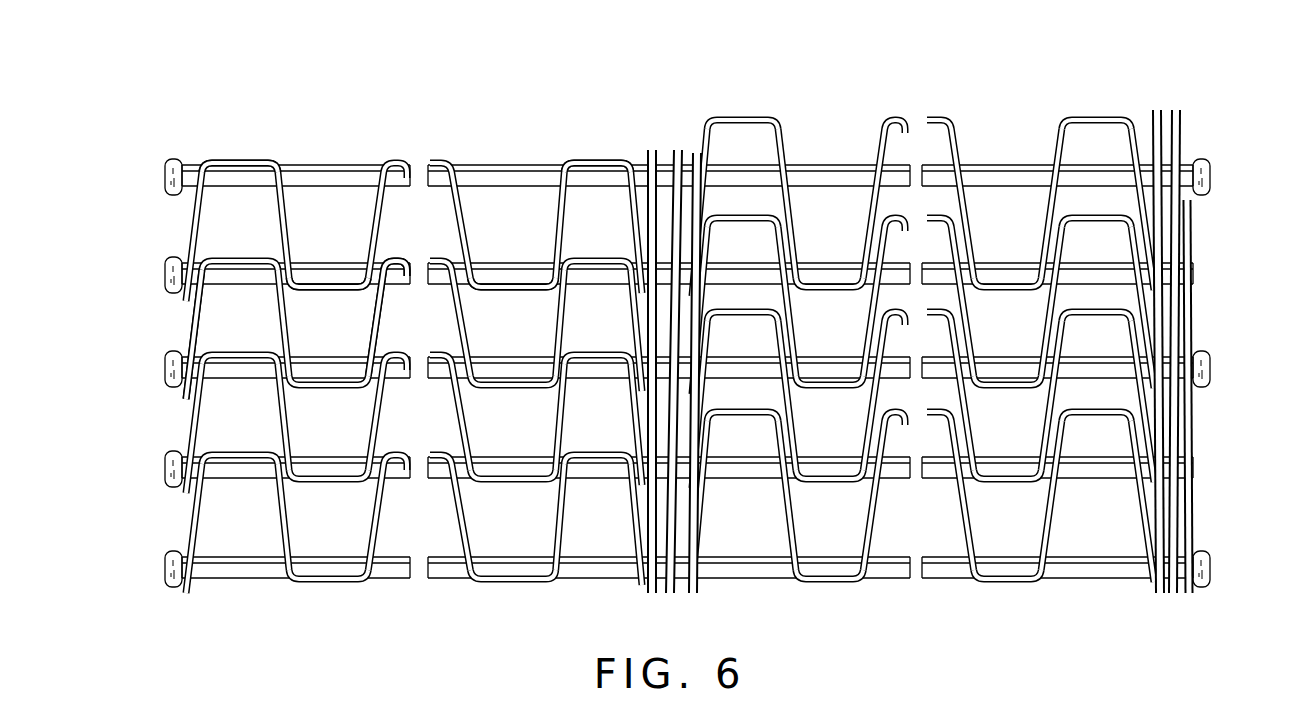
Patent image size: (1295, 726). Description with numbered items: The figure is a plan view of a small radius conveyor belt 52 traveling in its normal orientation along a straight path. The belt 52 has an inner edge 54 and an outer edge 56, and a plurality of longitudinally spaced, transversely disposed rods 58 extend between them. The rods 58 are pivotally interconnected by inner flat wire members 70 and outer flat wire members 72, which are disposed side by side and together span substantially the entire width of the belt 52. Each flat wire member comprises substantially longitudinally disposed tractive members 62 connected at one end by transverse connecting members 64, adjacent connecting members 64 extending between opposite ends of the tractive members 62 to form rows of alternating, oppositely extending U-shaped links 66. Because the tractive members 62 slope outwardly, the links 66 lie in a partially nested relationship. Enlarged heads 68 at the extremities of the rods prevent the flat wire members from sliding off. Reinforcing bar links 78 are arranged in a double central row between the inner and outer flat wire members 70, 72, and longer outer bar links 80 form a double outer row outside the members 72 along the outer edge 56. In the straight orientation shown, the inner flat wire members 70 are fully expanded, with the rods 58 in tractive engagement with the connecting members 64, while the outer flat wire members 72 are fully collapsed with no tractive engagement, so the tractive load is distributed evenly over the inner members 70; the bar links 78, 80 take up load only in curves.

The small radius conveyor belt 52 is at (232, 158).
The inner edge 54 is at (184, 323).
The outer edge 56 is at (1198, 325).
The rods 58 is at (512, 163).
The tractive members 62 is at (190, 238).
The transverse connecting members 64 is at (265, 158).
The U-shaped links 66 is at (190, 214).
The enlarged heads 68 is at (170, 166).
The inner flat wire members 70 is at (588, 158).
The outer flat wire members 72 is at (1155, 118).
The reinforcing bar links 78 is at (665, 600).
The outer bar links 80 is at (1182, 108).